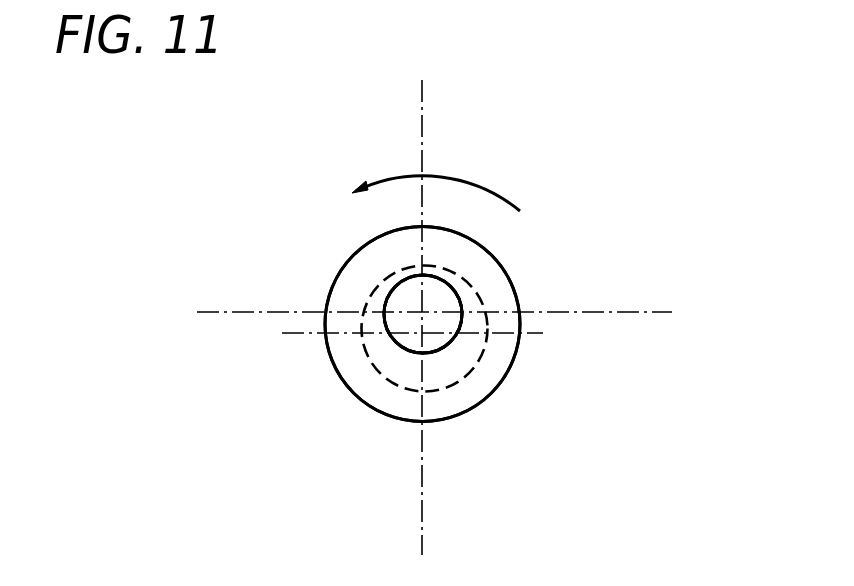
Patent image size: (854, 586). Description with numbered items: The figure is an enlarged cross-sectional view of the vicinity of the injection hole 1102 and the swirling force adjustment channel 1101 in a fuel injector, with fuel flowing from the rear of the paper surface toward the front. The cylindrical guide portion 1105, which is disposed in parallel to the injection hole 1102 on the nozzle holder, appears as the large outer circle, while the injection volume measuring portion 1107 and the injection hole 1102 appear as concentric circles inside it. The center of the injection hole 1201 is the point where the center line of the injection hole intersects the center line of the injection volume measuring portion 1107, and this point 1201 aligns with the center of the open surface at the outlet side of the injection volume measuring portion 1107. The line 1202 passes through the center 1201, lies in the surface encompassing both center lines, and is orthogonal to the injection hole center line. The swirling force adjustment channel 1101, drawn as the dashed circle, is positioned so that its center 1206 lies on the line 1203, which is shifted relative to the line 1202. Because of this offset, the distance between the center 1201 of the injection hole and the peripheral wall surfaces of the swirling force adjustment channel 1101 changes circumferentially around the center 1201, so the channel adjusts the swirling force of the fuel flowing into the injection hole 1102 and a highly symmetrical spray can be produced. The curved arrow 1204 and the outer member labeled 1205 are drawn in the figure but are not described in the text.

The swirling force adjustment channel 1101 is at (440, 388).
The injection hole 1102 is at (430, 307).
The cylindrical guide portion 1105 is at (490, 260).
The injection volume measuring portion 1107 is at (458, 336).
The center of the injection hole 1201 is at (423, 312).
The line through the injection hole center 1202 is at (572, 313).
The shifted line 1203 is at (337, 334).
The rotation direction arrow 1204 is at (452, 172).
The rotating member 1205 is at (365, 268).
The center of the swirling force adjustment channel 1206 is at (422, 333).